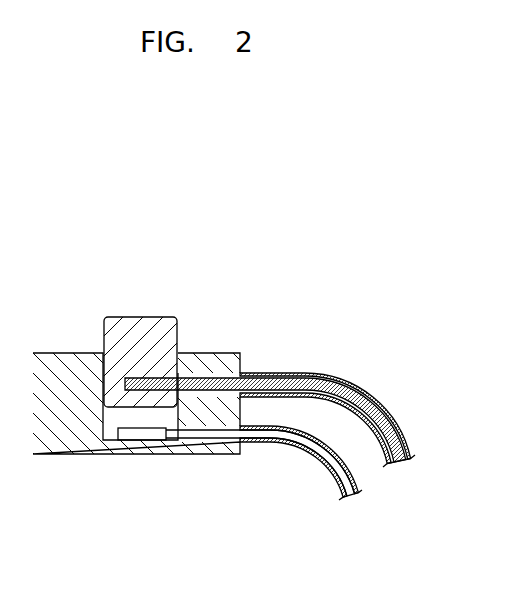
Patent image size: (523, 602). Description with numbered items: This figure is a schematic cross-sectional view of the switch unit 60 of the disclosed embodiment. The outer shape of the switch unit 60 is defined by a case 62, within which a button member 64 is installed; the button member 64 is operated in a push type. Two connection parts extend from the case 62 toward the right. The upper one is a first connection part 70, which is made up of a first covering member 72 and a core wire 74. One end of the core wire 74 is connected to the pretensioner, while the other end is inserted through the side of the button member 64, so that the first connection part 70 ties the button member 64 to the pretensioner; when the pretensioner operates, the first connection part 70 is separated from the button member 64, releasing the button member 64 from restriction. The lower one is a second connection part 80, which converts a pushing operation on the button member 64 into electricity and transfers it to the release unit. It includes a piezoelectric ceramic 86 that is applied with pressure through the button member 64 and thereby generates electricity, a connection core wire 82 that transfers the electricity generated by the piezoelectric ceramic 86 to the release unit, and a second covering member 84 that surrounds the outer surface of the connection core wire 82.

The switch unit 60 is at (193, 307).
The case 62 is at (84, 378).
The button member 64 is at (128, 334).
The first connection part 70 is at (270, 380).
The first covering member 72 is at (300, 373).
The core wire 74 is at (327, 381).
The second connection part 80 is at (240, 489).
The connection core wire 82 is at (301, 482).
The second covering member 84 is at (273, 441).
The piezoelectric ceramic 86 is at (150, 438).